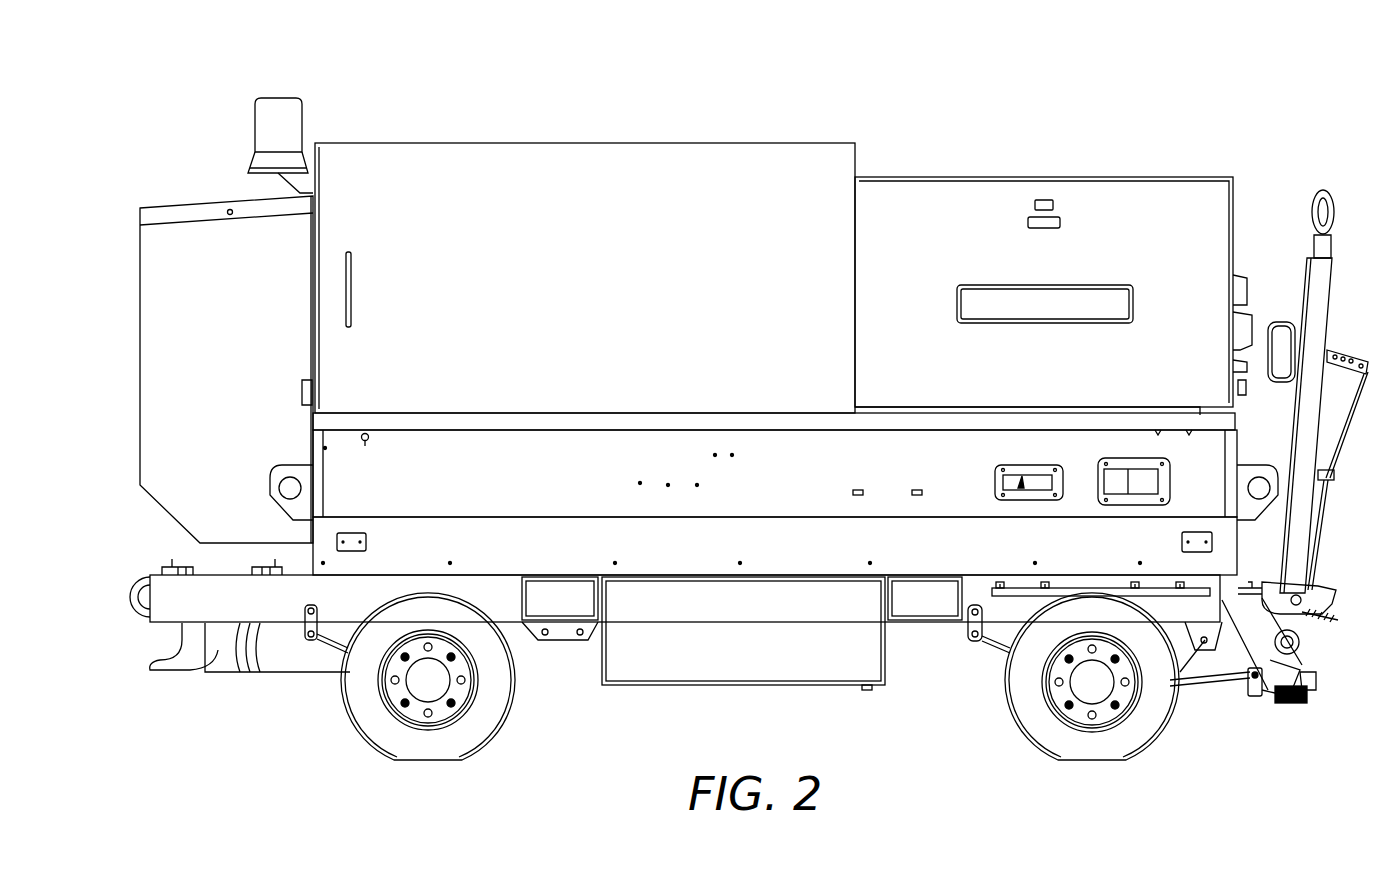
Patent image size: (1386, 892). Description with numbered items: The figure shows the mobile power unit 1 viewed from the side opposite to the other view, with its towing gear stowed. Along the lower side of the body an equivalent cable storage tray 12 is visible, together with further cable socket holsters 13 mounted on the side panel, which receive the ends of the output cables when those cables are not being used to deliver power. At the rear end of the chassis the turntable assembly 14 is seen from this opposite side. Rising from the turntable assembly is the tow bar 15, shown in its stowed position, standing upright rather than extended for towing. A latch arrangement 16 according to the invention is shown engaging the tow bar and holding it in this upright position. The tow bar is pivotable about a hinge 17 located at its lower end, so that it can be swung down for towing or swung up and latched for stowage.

The mobile power unit 1 is at (405, 80).
The cable storage tray 12 is at (783, 515).
The cable socket holsters 13 is at (995, 474).
The turntable assembly 14 is at (1224, 693).
The tow bar 15 is at (1333, 283).
The latch arrangement 16 is at (1330, 600).
The hinge 17 is at (1300, 645).